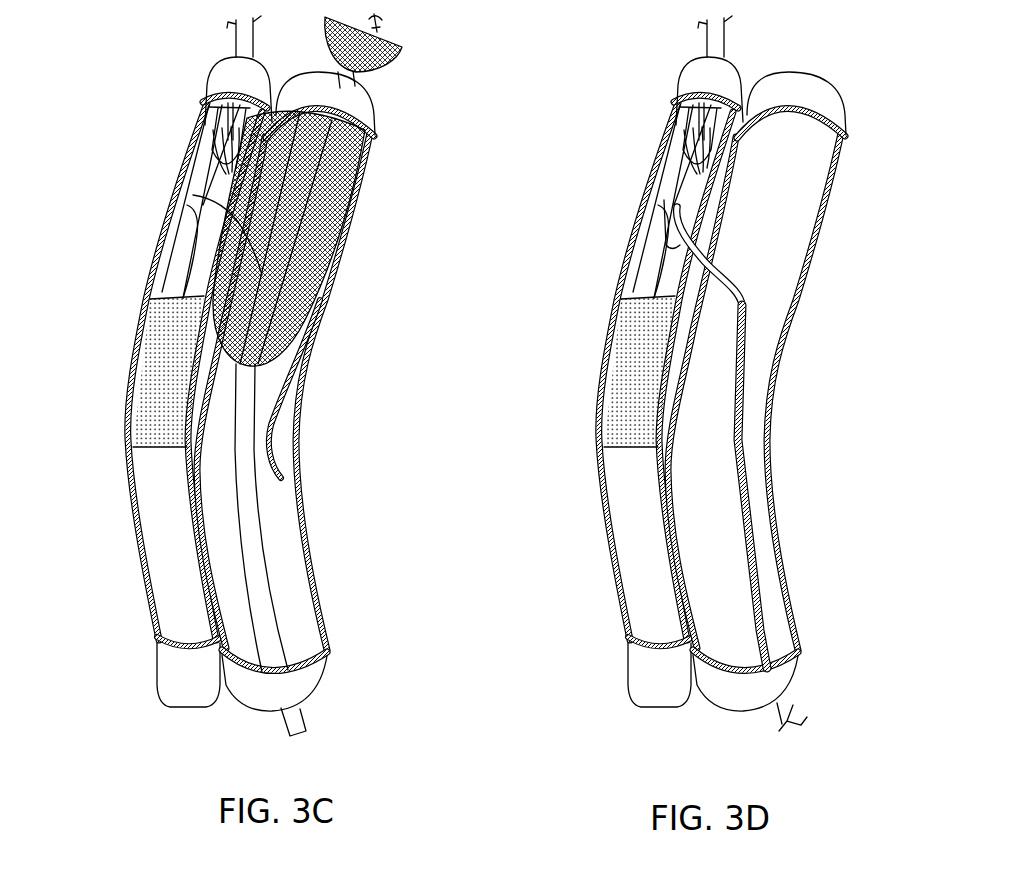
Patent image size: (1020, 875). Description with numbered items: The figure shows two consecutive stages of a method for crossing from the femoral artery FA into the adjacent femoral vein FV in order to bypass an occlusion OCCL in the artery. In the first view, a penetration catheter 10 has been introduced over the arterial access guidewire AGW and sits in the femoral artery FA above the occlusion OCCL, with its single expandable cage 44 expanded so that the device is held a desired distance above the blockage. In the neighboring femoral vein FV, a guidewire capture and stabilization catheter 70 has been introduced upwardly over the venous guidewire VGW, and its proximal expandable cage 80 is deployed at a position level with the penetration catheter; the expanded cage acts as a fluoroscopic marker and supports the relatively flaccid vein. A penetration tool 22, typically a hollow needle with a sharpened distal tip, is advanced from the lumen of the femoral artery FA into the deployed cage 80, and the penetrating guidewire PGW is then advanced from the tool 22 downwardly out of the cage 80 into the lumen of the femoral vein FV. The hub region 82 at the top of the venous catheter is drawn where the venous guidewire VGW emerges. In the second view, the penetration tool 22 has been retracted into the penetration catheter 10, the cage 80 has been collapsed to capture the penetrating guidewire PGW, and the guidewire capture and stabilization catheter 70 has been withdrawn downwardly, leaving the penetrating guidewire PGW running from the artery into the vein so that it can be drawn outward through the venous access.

In FIG. 3C, the penetration catheter 10 is at (203, 110).
In FIG. 3D, the penetration catheter 10 is at (674, 110).
In FIG. 3C, the single expandable cage 44 is at (200, 132).
In FIG. 3D, the single expandable cage 44 is at (670, 133).
In FIG. 3C, the penetration tool 22 is at (182, 204).
In FIG. 3D, the penetration tool 22 is at (727, 235).
In FIG. 3C, the proximal expandable cage 80 is at (322, 238).
In FIG. 3C, the balloon catheter hub 82 is at (386, 76).
In FIG. 3C, the guidewire capture and stabilization catheter 70 is at (260, 523).
In FIG. 3C, the arterial access guidewire AGW is at (190, 272).
In FIG. 3D, the arterial access guidewire AGW is at (660, 272).
In FIG. 3C, the occlusion OCCL is at (163, 388).
In FIG. 3D, the occlusion OCCL is at (639, 371).
In FIG. 3C, the femoral artery FA is at (134, 495).
In FIG. 3D, the femoral artery FA is at (607, 492).
In FIG. 3C, the femoral vein FV is at (318, 583).
In FIG. 3D, the femoral vein FV is at (790, 583).
In FIG. 3C, the venous guidewire VGW is at (378, 27).
In FIG. 3C, the penetrating guidewire PGW is at (297, 422).
In FIG. 3D, the penetrating guidewire PGW is at (734, 410).